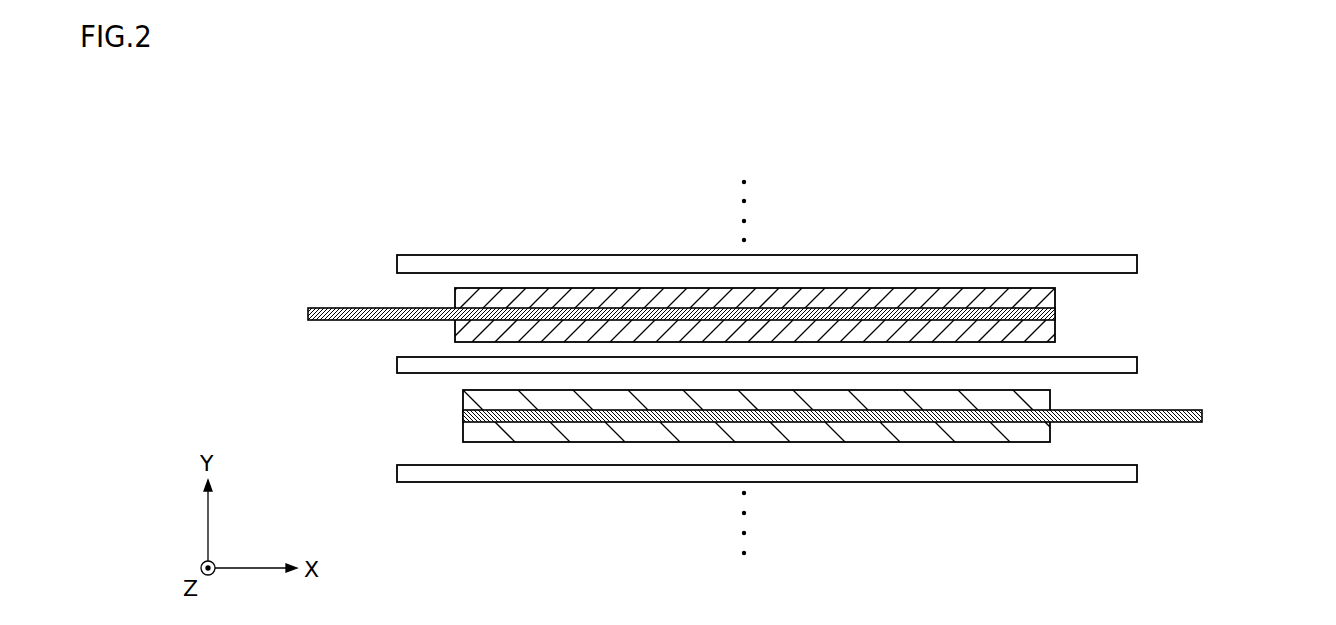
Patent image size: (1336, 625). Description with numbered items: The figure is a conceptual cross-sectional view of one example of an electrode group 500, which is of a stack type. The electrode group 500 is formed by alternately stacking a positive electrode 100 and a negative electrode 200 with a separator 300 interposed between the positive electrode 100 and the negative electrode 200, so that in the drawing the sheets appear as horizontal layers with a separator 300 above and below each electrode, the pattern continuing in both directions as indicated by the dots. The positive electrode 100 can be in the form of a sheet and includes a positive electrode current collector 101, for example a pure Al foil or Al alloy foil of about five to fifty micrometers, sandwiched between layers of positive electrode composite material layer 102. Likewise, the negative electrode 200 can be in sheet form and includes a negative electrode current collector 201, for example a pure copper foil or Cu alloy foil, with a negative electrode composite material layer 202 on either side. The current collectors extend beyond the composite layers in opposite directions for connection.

The electrode group 500 is at (436, 172).
The separator 300 is at (397, 266).
The positive electrode 100 is at (815, 312).
The positive electrode current collector 101 is at (1055, 313).
The positive electrode composite material layer 102 is at (1055, 296).
The negative electrode 200 is at (892, 417).
The negative electrode current collector 201 is at (1202, 417).
The negative electrode composite material layer 202 is at (1050, 400).